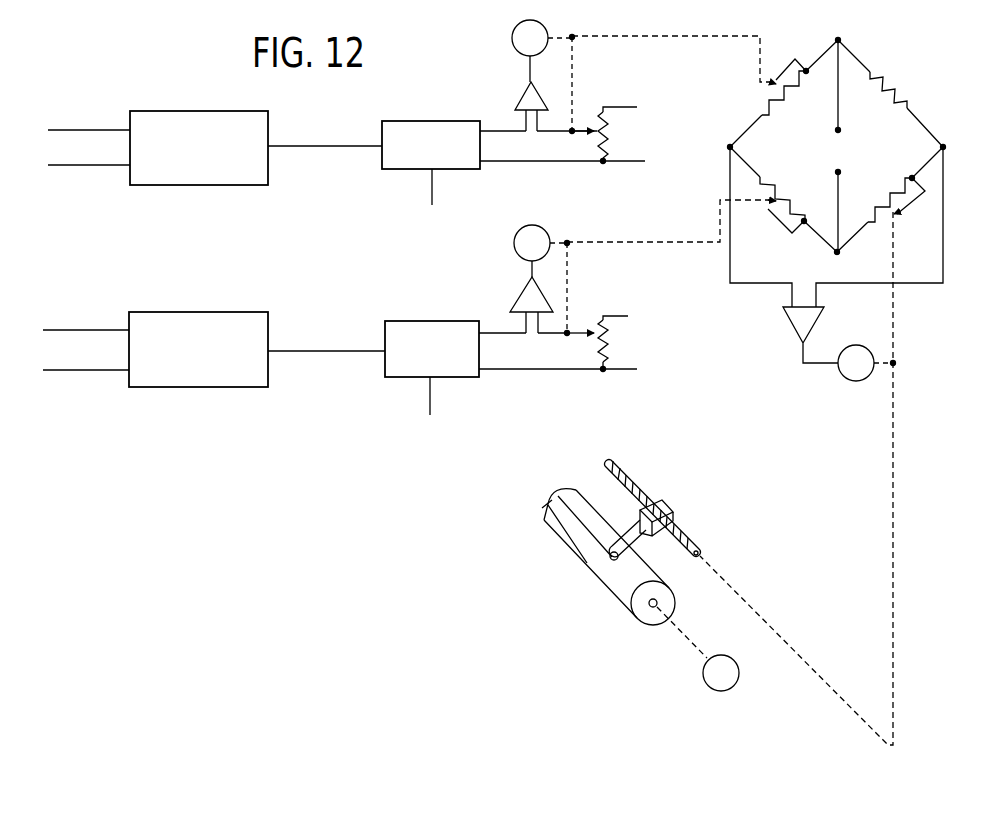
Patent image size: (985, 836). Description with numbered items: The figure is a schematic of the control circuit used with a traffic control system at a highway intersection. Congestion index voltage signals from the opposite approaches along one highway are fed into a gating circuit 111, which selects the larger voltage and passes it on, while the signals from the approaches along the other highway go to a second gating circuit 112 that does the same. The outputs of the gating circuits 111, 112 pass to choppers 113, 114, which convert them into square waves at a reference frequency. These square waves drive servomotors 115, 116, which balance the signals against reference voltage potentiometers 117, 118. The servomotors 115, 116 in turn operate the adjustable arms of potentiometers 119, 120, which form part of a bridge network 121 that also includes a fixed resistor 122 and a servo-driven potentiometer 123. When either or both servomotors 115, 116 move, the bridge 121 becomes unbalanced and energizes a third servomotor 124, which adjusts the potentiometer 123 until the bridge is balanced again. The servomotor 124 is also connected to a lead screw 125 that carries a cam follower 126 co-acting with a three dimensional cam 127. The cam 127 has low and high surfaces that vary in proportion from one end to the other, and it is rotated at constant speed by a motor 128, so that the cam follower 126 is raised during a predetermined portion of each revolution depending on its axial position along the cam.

The gating circuit 111 is at (227, 112).
The second gating circuit 112 is at (248, 313).
The chopper 113 is at (416, 121).
The chopper 114 is at (420, 322).
The servomotor 115 is at (512, 31).
The servomotor 116 is at (516, 236).
The reference voltage potentiometer 117 is at (613, 136).
The reference voltage potentiometer 118 is at (608, 347).
The potentiometer 119 is at (777, 104).
The potentiometer 120 is at (779, 199).
The bridge network 121 is at (849, 162).
The fixed resistor 122 is at (892, 97).
The servo-driven potentiometer 123 is at (893, 196).
The third servomotor 124 is at (862, 328).
The lead screw 125 is at (683, 531).
The cam follower 126 is at (637, 518).
The three dimensional cam 127 is at (573, 528).
The motor 128 is at (705, 671).